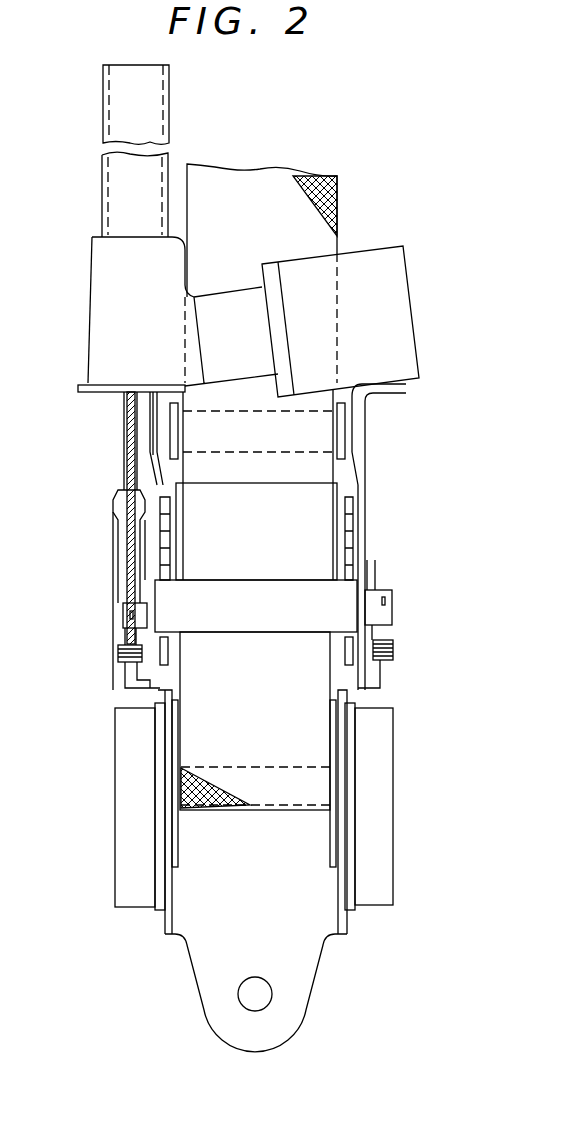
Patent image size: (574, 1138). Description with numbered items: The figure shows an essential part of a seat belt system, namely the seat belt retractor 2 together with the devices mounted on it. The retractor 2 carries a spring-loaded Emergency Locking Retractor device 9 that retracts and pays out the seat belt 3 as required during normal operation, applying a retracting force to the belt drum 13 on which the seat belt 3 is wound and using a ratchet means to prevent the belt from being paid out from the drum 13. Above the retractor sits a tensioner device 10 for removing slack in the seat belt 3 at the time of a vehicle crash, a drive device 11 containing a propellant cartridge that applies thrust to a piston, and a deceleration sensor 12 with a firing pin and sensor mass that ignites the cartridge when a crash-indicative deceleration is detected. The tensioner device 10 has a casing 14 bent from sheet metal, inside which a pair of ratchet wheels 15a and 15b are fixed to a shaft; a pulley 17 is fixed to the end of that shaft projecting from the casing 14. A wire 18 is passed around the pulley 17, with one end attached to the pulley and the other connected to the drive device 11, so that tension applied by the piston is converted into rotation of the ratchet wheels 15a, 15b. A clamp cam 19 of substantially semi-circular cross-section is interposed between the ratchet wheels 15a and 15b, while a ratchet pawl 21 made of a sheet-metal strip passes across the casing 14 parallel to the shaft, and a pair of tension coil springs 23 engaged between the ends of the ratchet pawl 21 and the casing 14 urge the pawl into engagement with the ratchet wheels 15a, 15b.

The seat belt retractor 2 is at (488, 431).
The seat belt 3 is at (270, 704).
The Emergency Locking Retractor (ELR) device 9 is at (393, 846).
The tensioner device 10 is at (401, 556).
The drive device 11 is at (100, 213).
The deceleration sensor 12 is at (411, 313).
The belt drum 13 is at (178, 840).
The casing 14 is at (367, 533).
The ratchet wheel 15a is at (349, 497).
The ratchet wheel 15b is at (163, 490).
The pulley 17 is at (118, 573).
The wire 18 is at (126, 441).
The clamp cam 19 is at (238, 490).
The ratchet pawl 21 is at (241, 580).
The tension coil springs 23 is at (118, 655).